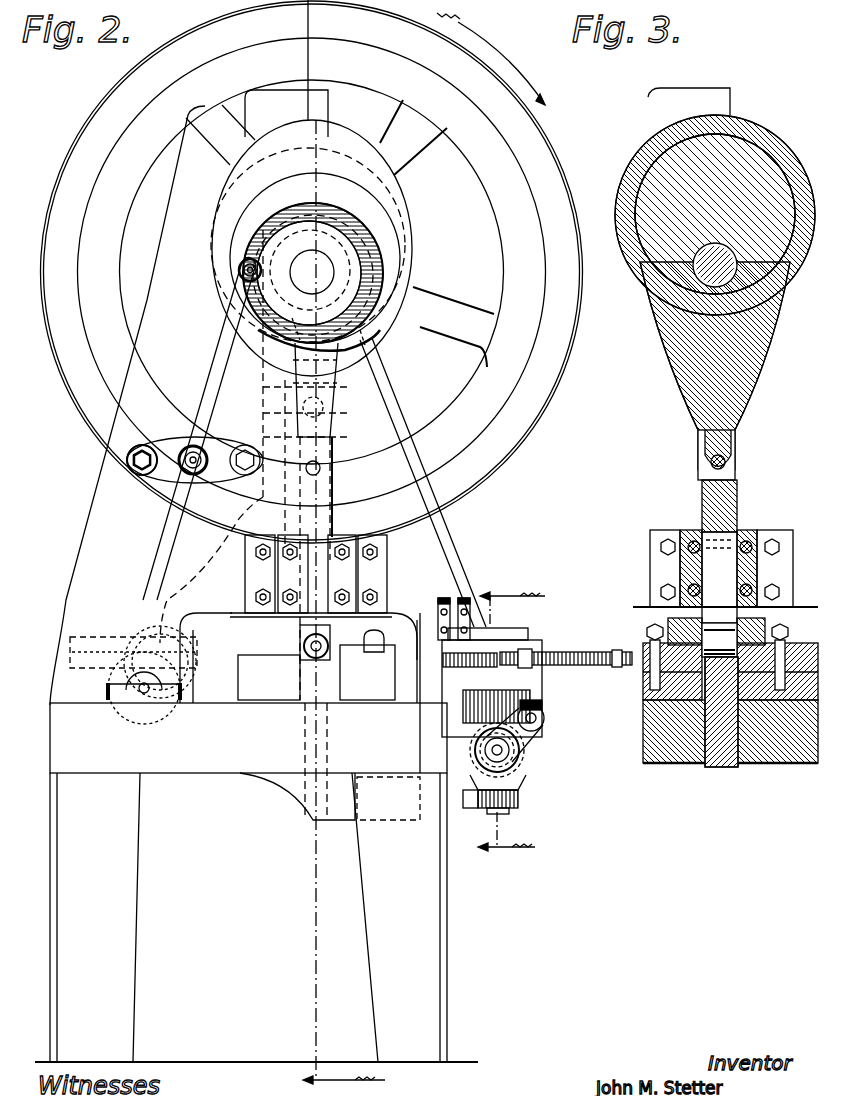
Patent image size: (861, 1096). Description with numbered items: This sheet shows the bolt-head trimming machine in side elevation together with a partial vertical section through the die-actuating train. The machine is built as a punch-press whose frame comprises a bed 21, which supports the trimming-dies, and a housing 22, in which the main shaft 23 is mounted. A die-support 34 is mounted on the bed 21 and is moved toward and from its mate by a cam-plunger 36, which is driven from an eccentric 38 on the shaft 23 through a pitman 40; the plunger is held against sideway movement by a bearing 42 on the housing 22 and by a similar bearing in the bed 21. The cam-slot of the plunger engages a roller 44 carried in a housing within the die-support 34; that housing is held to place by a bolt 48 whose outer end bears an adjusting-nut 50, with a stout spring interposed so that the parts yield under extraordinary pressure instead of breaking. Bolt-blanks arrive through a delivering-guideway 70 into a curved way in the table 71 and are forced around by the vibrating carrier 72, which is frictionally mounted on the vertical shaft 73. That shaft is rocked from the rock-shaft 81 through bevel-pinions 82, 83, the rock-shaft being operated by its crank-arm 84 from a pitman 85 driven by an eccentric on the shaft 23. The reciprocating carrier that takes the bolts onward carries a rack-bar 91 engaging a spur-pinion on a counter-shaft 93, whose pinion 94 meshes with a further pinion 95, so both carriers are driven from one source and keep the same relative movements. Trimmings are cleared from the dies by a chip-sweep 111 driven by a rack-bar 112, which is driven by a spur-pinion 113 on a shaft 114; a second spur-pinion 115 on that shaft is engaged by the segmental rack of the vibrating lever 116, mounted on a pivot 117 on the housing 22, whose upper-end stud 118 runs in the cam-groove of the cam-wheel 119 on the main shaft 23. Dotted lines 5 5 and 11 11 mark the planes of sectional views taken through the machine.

In FIG. 2, the dotted lines 5 5 is at (344, 1086).
In FIG. 2, the dotted lines 11 11 is at (511, 721).
In FIG. 2, the frame-bed 21 is at (236, 750).
In FIG. 3, the frame-bed 21 is at (678, 757).
In FIG. 2, the housing 22 is at (130, 494).
In FIG. 2, the main shaft 23 is at (312, 272).
In FIG. 3, the main shaft 23 is at (724, 266).
In FIG. 2, the die-support 34 is at (282, 665).
In FIG. 3, the die-support 34 is at (668, 625).
In FIG. 2, the cam-plunger 36 is at (325, 510).
In FIG. 3, the cam-plunger 36 is at (702, 503).
In FIG. 3, the eccentric 38 is at (648, 163).
In FIG. 2, the pitman 40 is at (357, 140).
In FIG. 3, the pitman 40 is at (708, 380).
In FIG. 2, the bearing 42 is at (296, 546).
In FIG. 3, the bearing 42 is at (750, 528).
In FIG. 3, the roller 44 is at (716, 630).
In FIG. 2, the bolt 48 is at (368, 656).
In FIG. 2, the adjusting-nut 50 is at (316, 660).
In FIG. 2, the delivering-guideway 70 is at (440, 604).
In FIG. 2, the table 71 is at (405, 640).
In FIG. 2, the vibrating carrier 72 is at (528, 628).
In FIG. 2, the vertical shaft 73 is at (500, 808).
In FIG. 2, the rock-shaft 81 is at (508, 758).
In FIG. 2, the bevel-pinion 82 is at (520, 778).
In FIG. 2, the bevel-pinion 83 is at (486, 796).
In FIG. 2, the crank-arm 84 is at (538, 735).
In FIG. 2, the pitman 85 is at (378, 384).
In FIG. 2, the rack-bar 91 is at (444, 672).
In FIG. 2, the counter-shaft 93 is at (485, 690).
In FIG. 2, the pinion 94 is at (465, 707).
In FIG. 2, the pinion 95 is at (548, 706).
In FIG. 2, the chip-sweep 111 is at (222, 640).
In FIG. 2, the rack-bar 112 is at (82, 648).
In FIG. 2, the spur-pinion 113 is at (125, 718).
In FIG. 2, the shaft 114 is at (150, 698).
In FIG. 2, the spur-pinion 115 is at (110, 680).
In FIG. 2, the vibrating lever 116 is at (217, 352).
In FIG. 2, the pivot 117 is at (185, 446).
In FIG. 2, the stud 118 is at (240, 272).
In FIG. 2, the cam-wheel 119 is at (380, 255).